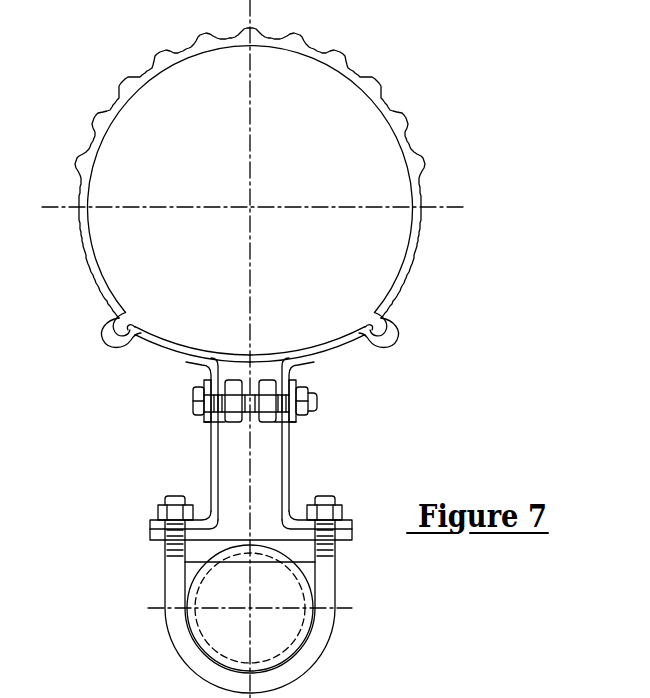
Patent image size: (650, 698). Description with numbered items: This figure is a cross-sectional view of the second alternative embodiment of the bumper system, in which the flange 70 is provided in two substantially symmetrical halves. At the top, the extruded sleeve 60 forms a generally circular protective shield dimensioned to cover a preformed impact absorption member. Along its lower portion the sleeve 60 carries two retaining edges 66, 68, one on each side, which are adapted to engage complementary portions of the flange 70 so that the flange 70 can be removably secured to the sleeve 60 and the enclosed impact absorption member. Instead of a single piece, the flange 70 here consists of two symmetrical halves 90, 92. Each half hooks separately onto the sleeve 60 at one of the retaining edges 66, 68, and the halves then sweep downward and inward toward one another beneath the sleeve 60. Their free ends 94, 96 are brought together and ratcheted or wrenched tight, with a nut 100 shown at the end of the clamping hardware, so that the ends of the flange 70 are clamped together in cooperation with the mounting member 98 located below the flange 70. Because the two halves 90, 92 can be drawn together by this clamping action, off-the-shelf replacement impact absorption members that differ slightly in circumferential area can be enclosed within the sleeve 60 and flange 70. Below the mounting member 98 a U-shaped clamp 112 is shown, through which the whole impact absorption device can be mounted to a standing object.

The sleeve 60 is at (384, 103).
The retaining edge 66 is at (398, 320).
The retaining edge 68 is at (102, 321).
The flange 70 is at (244, 375).
The flange half 90 is at (337, 355).
The flange half 92 is at (147, 349).
The free end 94 is at (297, 424).
The free end 96 is at (207, 421).
The mounting member 98 is at (290, 467).
The nut 100 is at (317, 411).
The U-bolt 112 is at (320, 597).